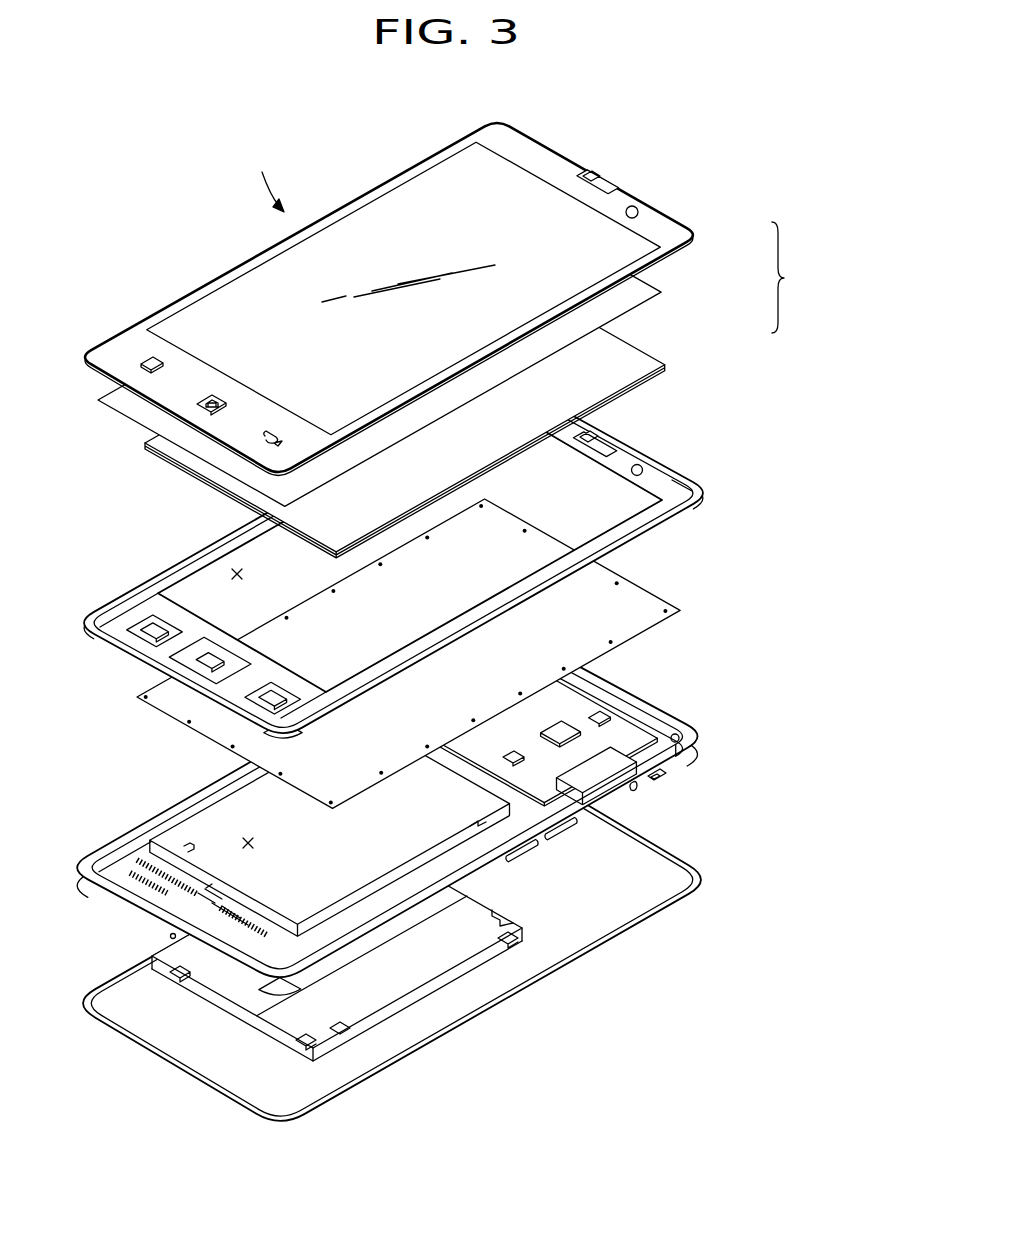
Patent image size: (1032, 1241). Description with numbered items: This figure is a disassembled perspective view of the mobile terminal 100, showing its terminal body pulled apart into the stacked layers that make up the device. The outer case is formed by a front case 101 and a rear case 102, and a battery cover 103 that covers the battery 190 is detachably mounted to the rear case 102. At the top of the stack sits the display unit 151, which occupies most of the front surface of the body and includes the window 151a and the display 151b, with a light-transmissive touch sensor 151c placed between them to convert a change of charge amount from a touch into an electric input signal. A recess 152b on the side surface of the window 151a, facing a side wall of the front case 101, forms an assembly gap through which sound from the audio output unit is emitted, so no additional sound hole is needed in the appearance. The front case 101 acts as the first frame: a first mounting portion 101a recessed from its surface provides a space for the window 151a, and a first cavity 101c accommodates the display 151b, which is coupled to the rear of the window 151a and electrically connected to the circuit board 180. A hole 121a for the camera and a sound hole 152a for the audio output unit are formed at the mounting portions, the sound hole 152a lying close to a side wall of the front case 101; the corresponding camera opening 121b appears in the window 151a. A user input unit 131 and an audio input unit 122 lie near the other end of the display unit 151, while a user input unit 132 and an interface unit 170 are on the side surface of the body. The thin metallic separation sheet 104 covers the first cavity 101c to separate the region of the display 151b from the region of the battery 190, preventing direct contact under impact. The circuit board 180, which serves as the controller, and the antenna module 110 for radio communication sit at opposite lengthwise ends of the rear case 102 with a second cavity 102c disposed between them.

The mobile terminal 100 is at (261, 180).
The front case 101 is at (706, 503).
The first mounting portion 101a is at (684, 486).
The first cavity 101c is at (235, 572).
The rear case 102 is at (703, 753).
The second cavity 102c is at (246, 841).
The battery cover 103 is at (645, 888).
The separation sheet 104 is at (640, 600).
The antenna module 110 is at (140, 870).
The hole 121a is at (642, 467).
The camera hole 121b is at (640, 207).
The audio input unit 122 is at (168, 937).
The user input unit 131 is at (148, 356).
The user input unit 132 is at (563, 832).
The display unit 151 is at (795, 277).
The window 151a is at (697, 236).
The display 151b is at (625, 355).
The touch sensor 151c is at (660, 289).
The sound hole 152a is at (600, 441).
The recess 152b is at (598, 178).
The interface unit 170 is at (612, 780).
The circuit board 180 is at (628, 718).
The battery 190 is at (425, 968).